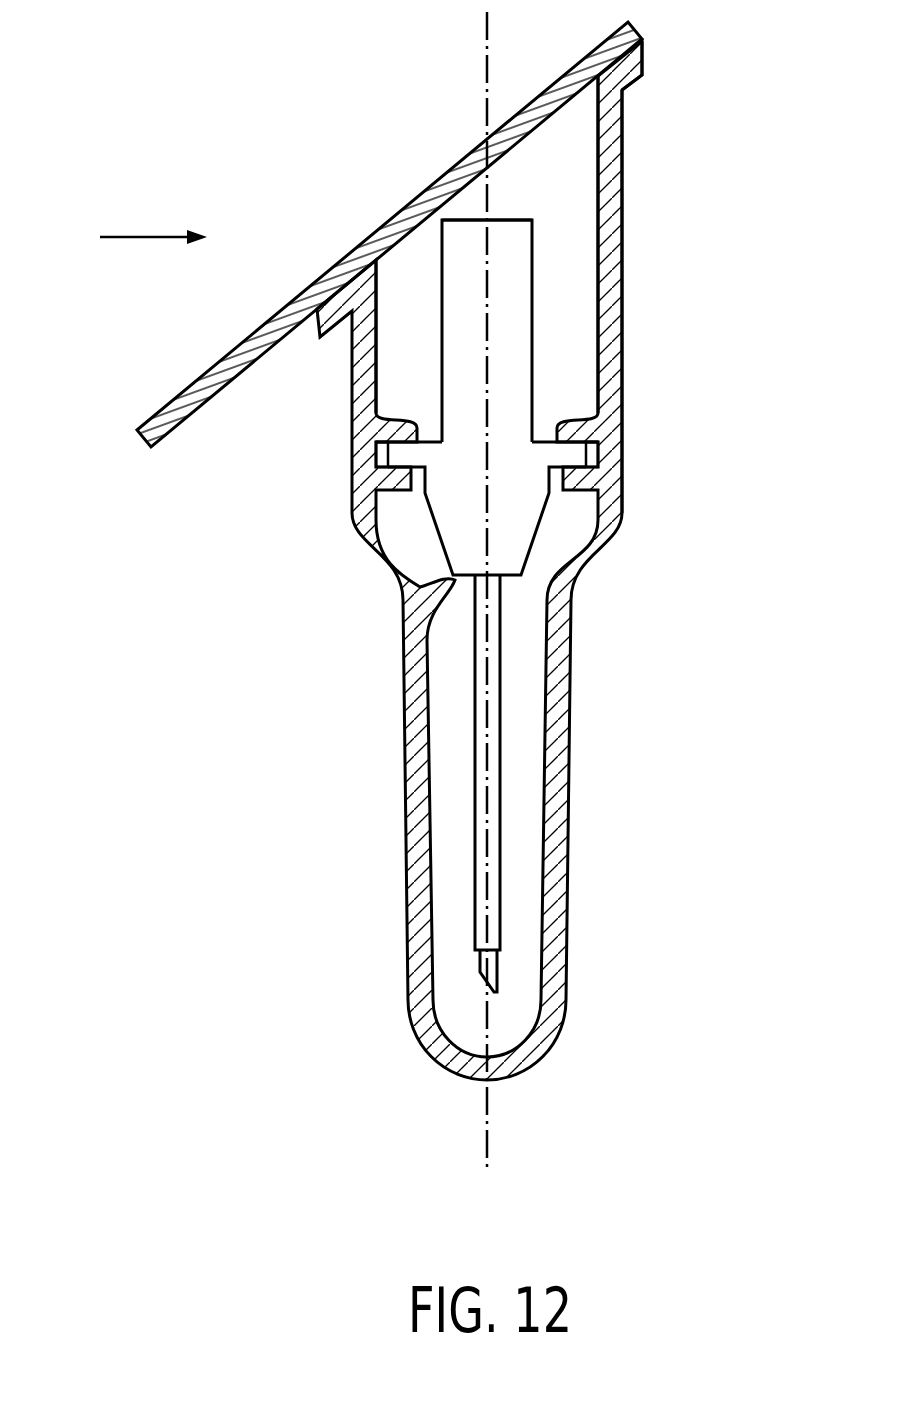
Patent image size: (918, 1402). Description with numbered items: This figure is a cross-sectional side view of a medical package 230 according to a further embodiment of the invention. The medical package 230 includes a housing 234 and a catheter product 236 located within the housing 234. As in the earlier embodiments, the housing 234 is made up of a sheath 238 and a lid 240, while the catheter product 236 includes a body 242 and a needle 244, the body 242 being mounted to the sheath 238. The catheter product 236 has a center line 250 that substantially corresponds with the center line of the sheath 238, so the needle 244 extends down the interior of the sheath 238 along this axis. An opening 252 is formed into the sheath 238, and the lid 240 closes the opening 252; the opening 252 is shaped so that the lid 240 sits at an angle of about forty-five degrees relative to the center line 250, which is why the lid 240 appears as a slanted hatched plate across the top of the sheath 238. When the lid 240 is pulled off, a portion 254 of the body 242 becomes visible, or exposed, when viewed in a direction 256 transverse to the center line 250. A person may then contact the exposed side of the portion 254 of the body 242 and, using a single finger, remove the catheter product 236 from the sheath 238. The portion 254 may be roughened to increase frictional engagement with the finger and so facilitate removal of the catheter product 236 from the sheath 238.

The medical package 230 is at (396, 594).
The housing 234 is at (132, 529).
The catheter product 236 is at (397, 381).
The sheath 238 is at (620, 372).
The lid 240 is at (400, 213).
The body 242 is at (510, 315).
The needle 244 is at (497, 965).
The center line 250 is at (488, 1150).
The opening 252 is at (582, 100).
The portion 254 is at (500, 220).
The direction 256 is at (153, 220).